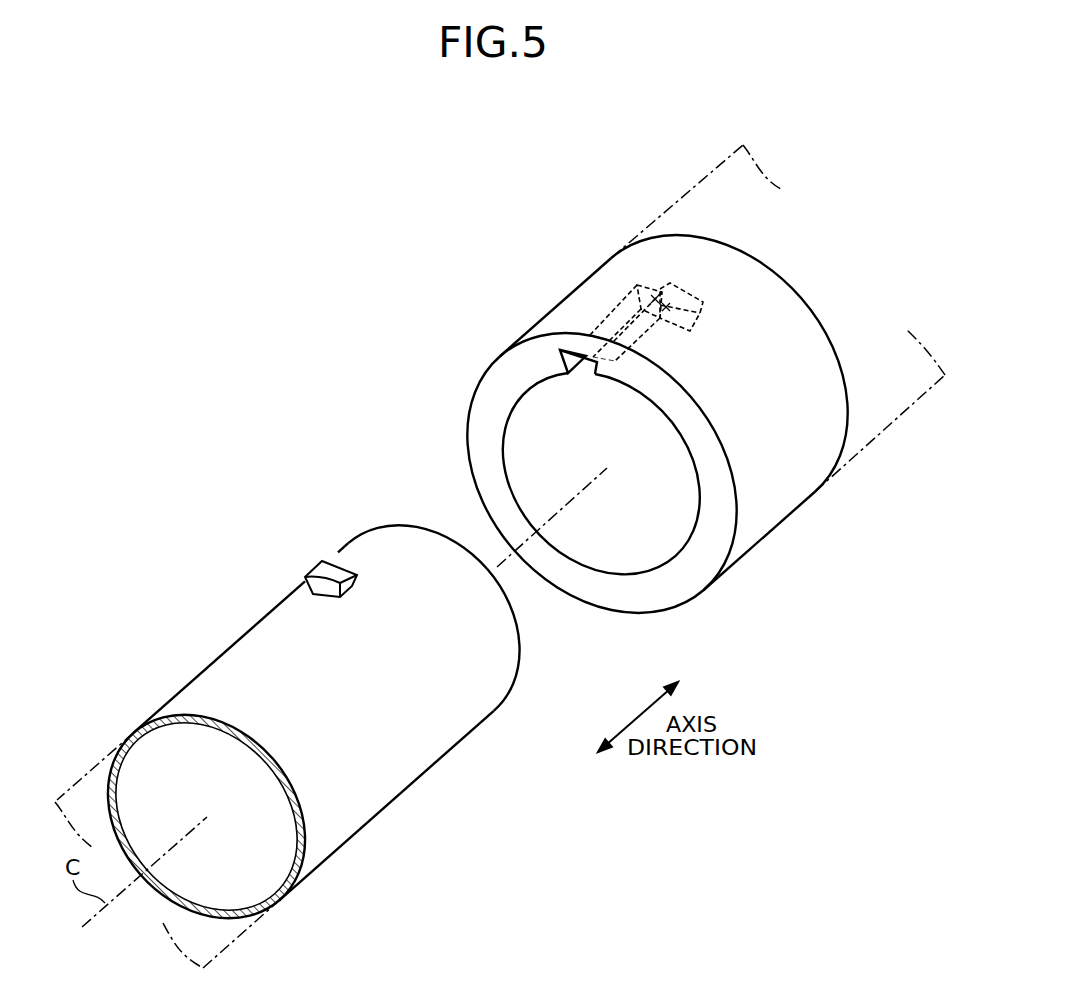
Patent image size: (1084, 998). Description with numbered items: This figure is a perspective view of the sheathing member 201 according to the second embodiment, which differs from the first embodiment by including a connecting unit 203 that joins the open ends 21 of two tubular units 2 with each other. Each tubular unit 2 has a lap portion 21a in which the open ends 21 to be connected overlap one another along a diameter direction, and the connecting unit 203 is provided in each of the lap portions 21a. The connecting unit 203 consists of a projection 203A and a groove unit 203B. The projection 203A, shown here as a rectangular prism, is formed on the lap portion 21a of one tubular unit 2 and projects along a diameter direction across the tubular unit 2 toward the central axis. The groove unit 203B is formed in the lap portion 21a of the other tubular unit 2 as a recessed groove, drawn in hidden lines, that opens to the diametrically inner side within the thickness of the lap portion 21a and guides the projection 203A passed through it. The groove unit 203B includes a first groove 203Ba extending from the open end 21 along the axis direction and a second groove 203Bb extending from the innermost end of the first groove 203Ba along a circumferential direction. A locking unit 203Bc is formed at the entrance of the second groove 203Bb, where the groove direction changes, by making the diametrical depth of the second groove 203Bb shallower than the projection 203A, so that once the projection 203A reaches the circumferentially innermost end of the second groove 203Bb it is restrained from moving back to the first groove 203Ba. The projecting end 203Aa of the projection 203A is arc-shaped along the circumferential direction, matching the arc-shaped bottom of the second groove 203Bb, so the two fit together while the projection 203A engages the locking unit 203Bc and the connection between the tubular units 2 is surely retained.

The sheathing member 201 is at (467, 538).
The tubular unit 2 is at (467, 538).
The open end 21 is at (467, 596).
The lap portion 21a is at (780, 485).
The connecting unit 203 is at (488, 357).
The projection 203A is at (335, 526).
The projecting end 203Aa is at (345, 566).
The groove unit 203B is at (587, 239).
The first groove 203Ba is at (610, 302).
The second groove 203Bb is at (690, 286).
The locking unit 203Bc is at (660, 297).